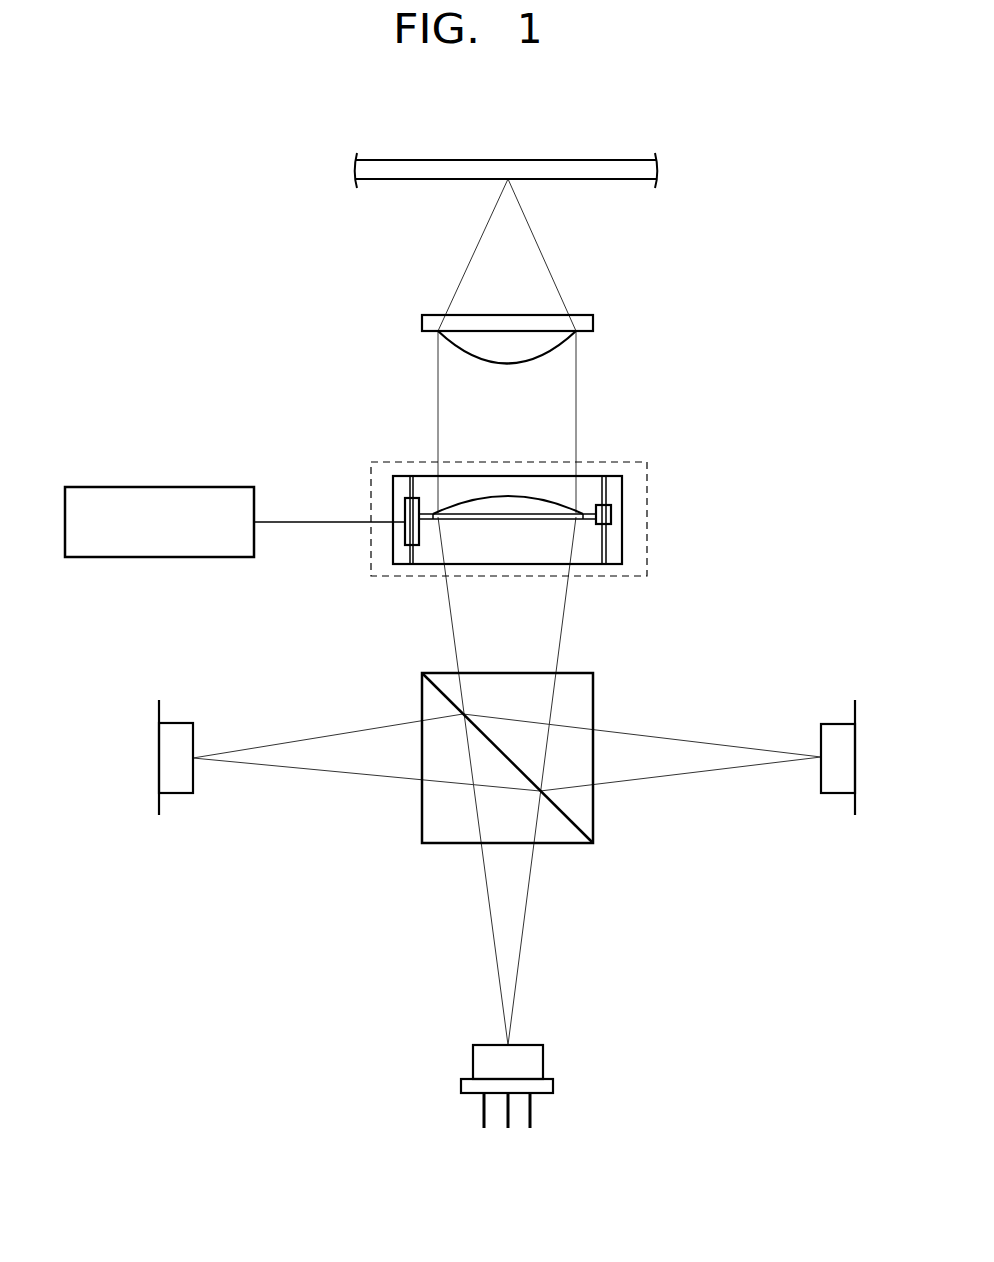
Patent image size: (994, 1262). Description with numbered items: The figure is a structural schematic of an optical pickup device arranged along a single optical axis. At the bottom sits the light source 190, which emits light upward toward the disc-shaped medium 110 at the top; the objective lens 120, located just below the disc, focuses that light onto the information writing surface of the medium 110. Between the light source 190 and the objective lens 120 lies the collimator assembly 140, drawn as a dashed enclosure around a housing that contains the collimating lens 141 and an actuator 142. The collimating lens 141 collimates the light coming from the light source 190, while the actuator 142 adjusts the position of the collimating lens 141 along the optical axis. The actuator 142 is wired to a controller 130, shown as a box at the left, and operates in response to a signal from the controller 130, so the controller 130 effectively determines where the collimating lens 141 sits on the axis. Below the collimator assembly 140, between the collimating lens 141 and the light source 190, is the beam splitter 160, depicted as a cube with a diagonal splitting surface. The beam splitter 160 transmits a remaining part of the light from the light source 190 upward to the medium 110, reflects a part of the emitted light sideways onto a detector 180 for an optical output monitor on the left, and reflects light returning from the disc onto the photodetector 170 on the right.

The disc-shaped medium 110 is at (601, 160).
The objective lens 120 is at (593, 322).
The controller 130 is at (160, 487).
The collimator assembly 140 is at (543, 516).
The collimating lens 141 is at (504, 517).
The actuator 142 is at (400, 491).
The beam splitter 160 is at (593, 693).
The photodetector 170 is at (834, 724).
The detector for an optical output monitor 180 is at (185, 723).
The light source 190 is at (473, 1061).